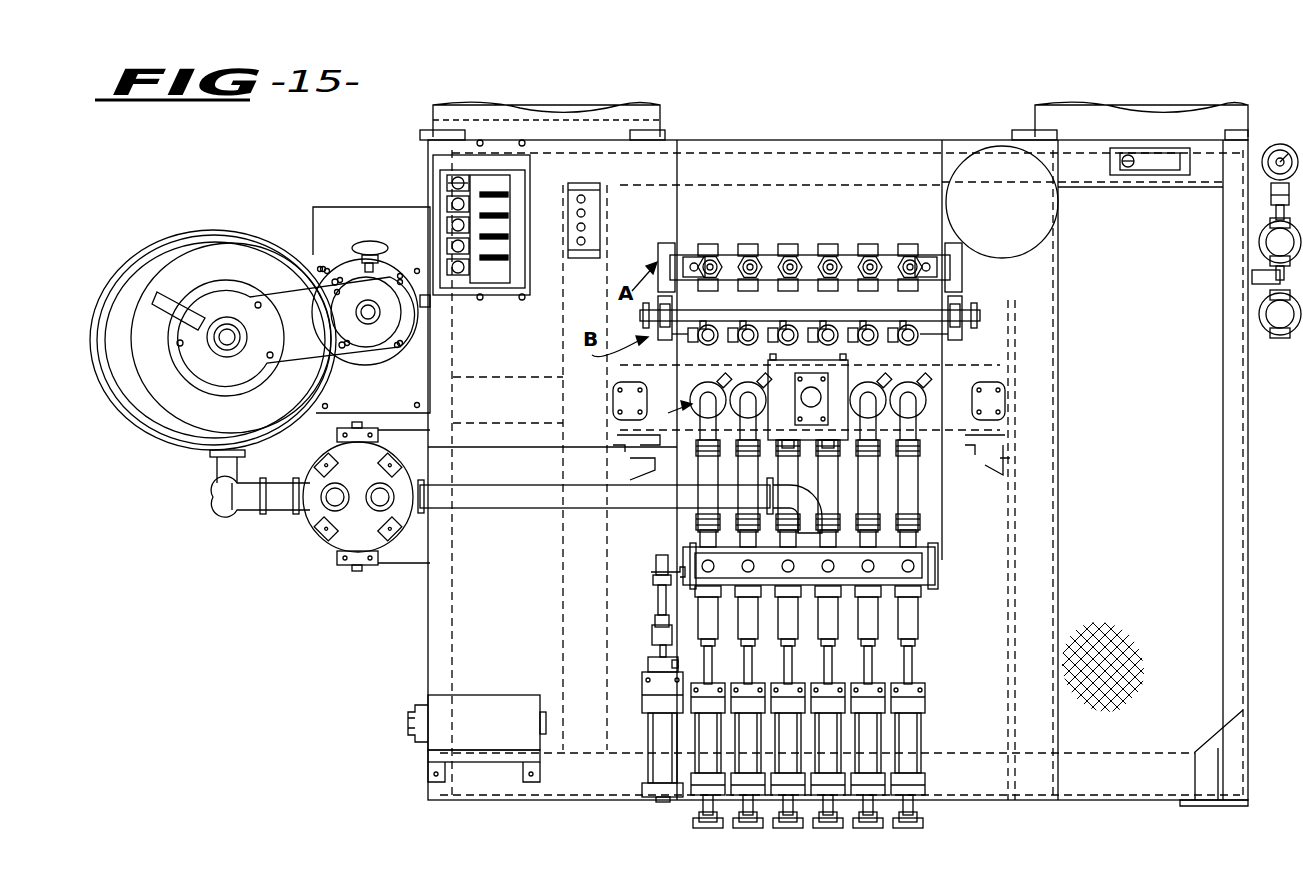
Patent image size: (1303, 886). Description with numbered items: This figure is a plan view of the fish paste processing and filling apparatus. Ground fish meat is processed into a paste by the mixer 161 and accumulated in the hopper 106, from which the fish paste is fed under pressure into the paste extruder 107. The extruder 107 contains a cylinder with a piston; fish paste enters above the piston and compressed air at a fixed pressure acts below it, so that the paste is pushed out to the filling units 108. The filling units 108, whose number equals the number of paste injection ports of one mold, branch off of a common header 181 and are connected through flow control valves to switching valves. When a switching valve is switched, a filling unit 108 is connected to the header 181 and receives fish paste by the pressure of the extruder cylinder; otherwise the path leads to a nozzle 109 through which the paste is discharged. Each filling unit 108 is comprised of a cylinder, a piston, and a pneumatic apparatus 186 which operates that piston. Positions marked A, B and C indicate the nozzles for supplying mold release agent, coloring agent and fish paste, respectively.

The hopper 106 is at (170, 252).
The mixer 161 is at (238, 258).
The paste extruder 107 is at (342, 535).
The nozzle 109 is at (912, 397).
The common header 181 is at (928, 577).
The filling unit 108 is at (910, 625).
The pneumatic apparatus 186 is at (912, 740).